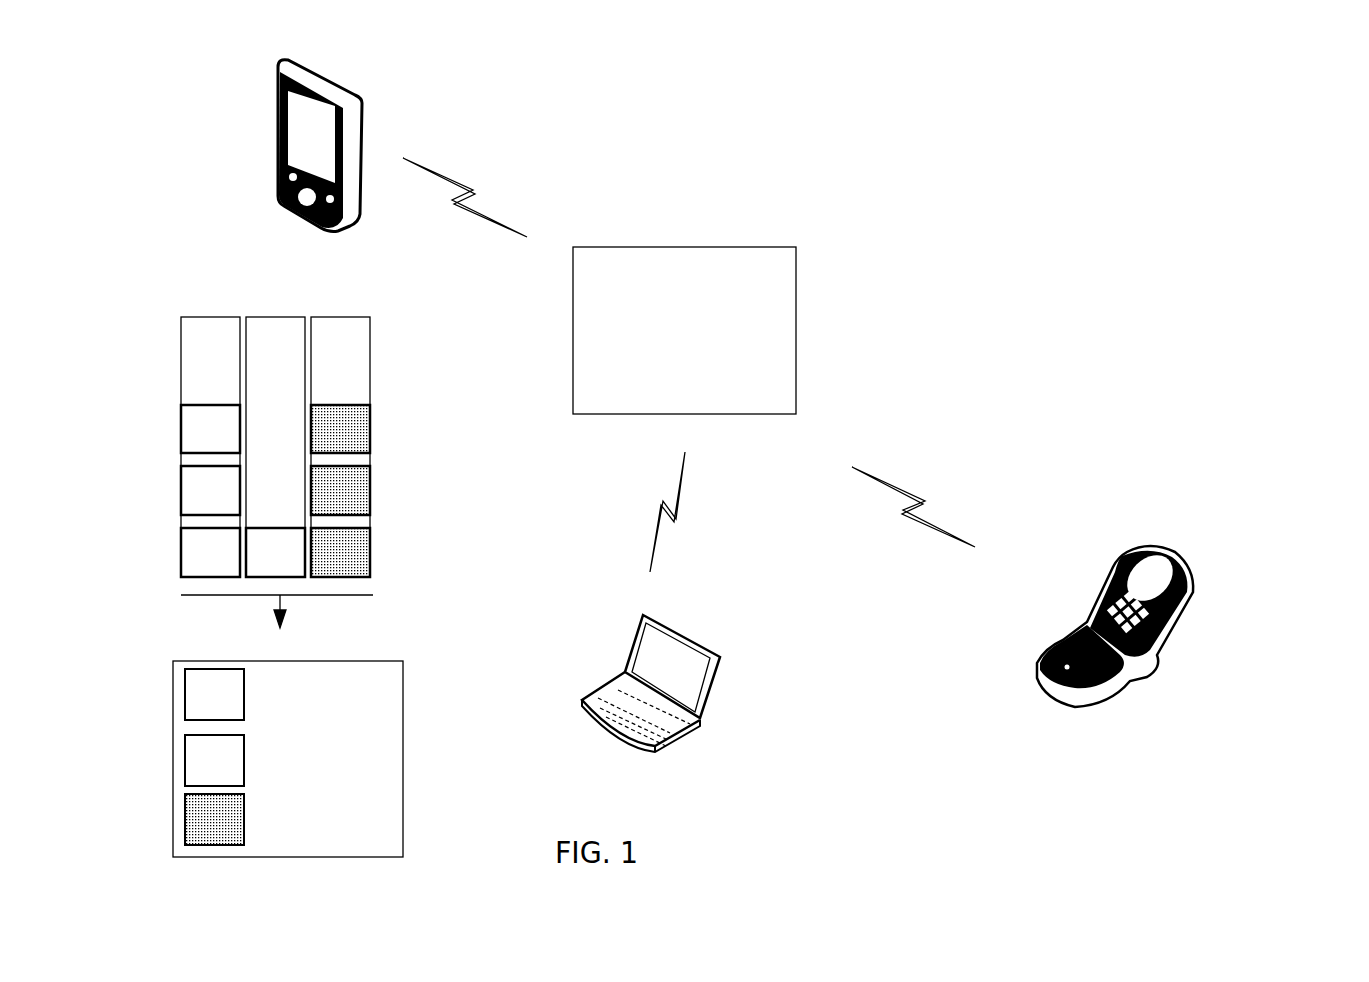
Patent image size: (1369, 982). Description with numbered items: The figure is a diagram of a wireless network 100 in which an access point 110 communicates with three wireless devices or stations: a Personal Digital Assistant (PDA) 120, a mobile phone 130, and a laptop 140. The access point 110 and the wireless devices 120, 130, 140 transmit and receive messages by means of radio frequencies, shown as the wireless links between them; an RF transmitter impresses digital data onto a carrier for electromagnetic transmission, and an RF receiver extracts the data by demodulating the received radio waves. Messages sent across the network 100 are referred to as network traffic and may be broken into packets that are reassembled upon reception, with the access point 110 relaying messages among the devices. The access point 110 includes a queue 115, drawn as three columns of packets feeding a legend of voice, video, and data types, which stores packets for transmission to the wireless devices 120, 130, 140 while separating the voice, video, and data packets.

The wireless network 100 is at (1259, 174).
The access point 110 is at (684, 330).
The queue 115 is at (138, 410).
The Personal Digital Assistant (PDA) 120 is at (362, 133).
The mobile phone 130 is at (1185, 558).
The laptop 140 is at (718, 682).